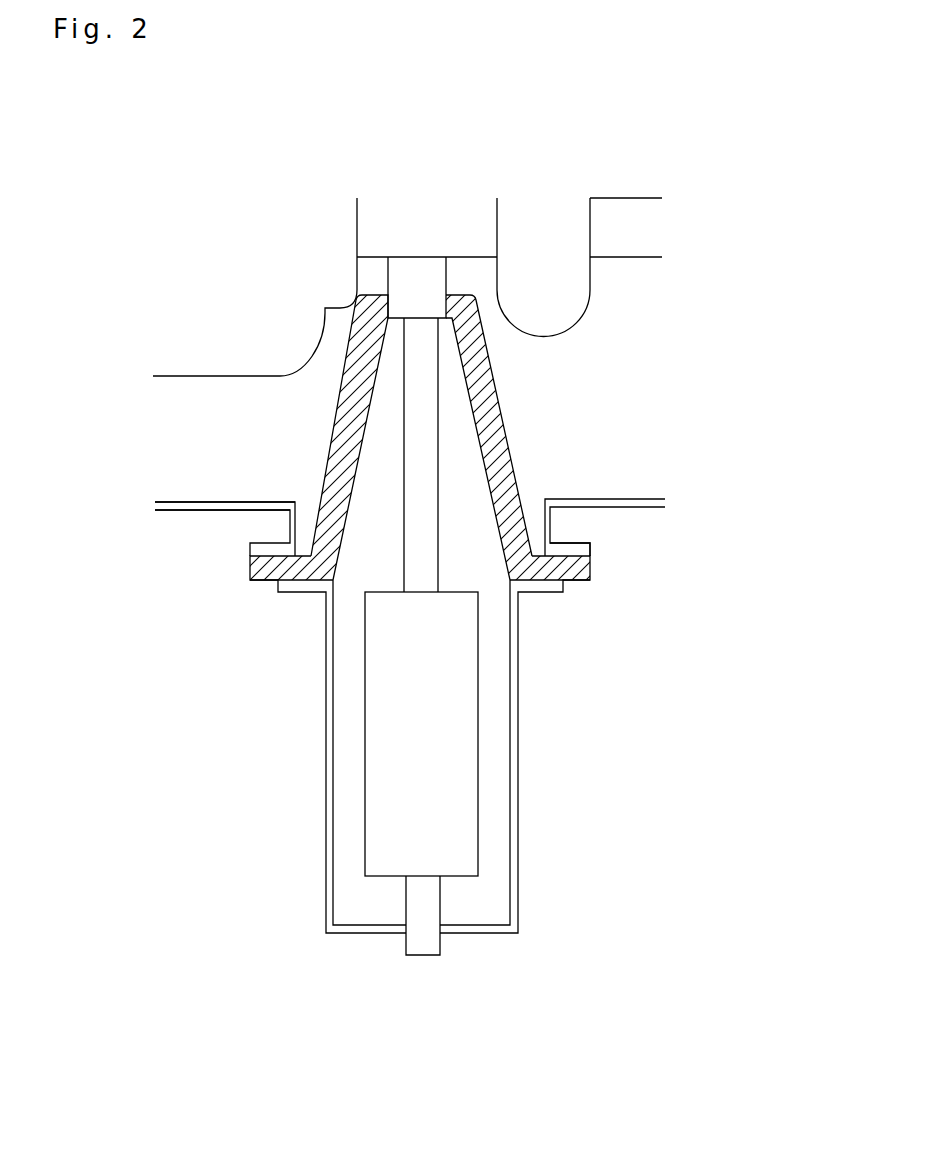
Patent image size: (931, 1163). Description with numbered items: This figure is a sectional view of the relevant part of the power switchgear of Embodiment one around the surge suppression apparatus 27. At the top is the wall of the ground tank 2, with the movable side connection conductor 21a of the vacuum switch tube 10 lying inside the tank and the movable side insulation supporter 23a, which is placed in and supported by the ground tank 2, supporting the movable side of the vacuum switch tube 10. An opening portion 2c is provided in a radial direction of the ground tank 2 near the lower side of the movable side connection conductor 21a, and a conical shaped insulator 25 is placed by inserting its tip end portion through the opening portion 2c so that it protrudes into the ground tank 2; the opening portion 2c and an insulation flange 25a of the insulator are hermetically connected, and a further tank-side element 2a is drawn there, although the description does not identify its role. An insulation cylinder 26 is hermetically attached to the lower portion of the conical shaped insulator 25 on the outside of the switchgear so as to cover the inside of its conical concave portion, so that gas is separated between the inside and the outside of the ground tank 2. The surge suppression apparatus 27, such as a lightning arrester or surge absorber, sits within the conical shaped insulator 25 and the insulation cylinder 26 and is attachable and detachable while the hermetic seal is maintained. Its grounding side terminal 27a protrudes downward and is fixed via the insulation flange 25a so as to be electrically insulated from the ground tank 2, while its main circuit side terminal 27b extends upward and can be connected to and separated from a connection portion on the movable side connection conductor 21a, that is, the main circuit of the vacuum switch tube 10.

The ground tank 2 is at (625, 509).
The engaging portion of fixing member 2a is at (582, 547).
The opening portion 2c is at (305, 507).
The vacuum switch tube 10 is at (632, 257).
The movable side connection conductor 21a is at (418, 232).
The movable side insulation supporter 23a is at (185, 376).
The conical shaped insulator 25 is at (507, 435).
The insulation flange 25a is at (258, 571).
The insulation cylinder 26 is at (517, 692).
The surge suppression apparatus 27 is at (450, 762).
The grounding side terminal 27a is at (422, 955).
The main circuit side terminal 27b is at (417, 485).